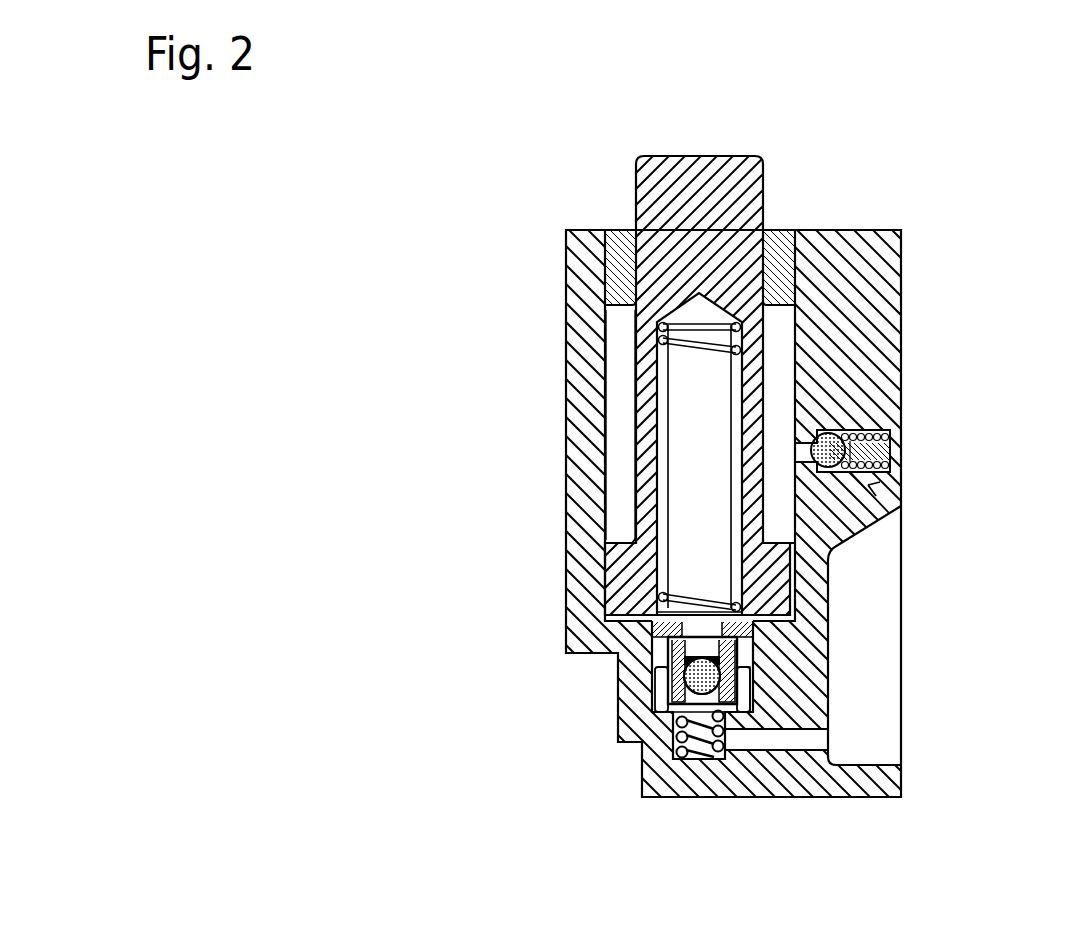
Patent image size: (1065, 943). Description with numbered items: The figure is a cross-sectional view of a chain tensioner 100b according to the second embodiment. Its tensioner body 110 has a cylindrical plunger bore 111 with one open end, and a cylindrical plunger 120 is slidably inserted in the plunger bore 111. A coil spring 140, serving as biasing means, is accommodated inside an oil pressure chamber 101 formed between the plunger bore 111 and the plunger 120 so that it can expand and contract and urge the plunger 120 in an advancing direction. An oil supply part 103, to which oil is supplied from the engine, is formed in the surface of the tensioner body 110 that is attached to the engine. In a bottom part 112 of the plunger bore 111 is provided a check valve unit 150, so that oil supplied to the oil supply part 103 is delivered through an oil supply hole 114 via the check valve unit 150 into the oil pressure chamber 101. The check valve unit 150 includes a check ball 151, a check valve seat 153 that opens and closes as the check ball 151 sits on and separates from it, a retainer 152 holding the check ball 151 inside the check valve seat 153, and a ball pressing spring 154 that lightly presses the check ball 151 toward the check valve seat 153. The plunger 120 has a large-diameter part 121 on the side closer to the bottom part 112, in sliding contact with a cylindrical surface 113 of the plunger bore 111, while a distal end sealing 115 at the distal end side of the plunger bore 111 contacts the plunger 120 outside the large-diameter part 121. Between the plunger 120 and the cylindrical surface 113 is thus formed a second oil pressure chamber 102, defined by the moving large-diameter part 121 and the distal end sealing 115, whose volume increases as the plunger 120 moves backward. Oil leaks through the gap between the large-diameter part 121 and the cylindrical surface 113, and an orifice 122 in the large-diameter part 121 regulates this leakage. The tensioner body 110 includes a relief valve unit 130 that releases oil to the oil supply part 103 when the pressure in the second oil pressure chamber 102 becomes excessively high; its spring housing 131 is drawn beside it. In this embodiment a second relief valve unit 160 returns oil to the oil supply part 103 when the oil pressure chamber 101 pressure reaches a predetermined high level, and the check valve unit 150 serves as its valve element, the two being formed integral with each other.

The chain tensioner 100b is at (423, 230).
The tensioner body 110 is at (870, 322).
The plunger 120 is at (680, 207).
The distal end sealing 115 is at (780, 230).
The coil spring 140 is at (657, 338).
The second oil pressure chamber 102 is at (597, 407).
The oil pressure chamber 101 is at (680, 534).
The relief valve unit 130 is at (830, 433).
The ball spring housing 131 is at (893, 460).
The large-diameter part 121 is at (785, 544).
The orifice 122 is at (811, 588).
The plunger bore 111 is at (445, 513).
The cylindrical surface 113 is at (620, 538).
The bottom part 112 is at (617, 605).
The oil supply part 103 is at (877, 663).
The check valve unit 150 is at (483, 645).
The retainer 152 is at (665, 643).
The ball pressing spring 154 is at (660, 670).
The check ball 151 is at (688, 683).
The check valve seat 153 is at (683, 716).
The second relief valve unit 160 is at (750, 673).
The oil supply hole 114 is at (805, 748).